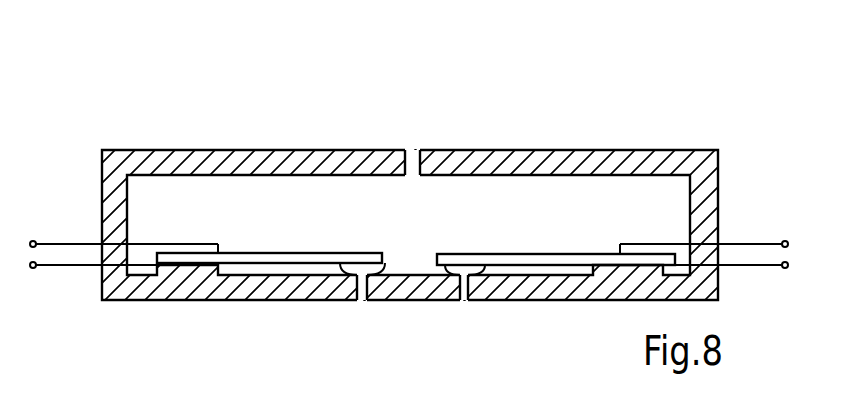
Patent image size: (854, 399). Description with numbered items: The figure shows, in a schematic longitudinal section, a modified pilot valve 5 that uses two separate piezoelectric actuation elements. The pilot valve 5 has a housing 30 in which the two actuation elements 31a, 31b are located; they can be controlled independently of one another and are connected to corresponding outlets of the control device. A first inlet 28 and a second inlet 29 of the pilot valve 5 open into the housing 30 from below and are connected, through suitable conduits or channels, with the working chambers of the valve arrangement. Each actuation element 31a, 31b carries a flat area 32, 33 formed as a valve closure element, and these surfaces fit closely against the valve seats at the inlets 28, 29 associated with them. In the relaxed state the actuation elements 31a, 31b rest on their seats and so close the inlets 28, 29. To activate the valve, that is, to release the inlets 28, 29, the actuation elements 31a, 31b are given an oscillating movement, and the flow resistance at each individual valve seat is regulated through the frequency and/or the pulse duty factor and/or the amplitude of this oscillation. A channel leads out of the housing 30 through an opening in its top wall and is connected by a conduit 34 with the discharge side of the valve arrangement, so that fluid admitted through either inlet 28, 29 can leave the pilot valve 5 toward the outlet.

The pilot valve 5 is at (427, 213).
The first inlet 28 is at (358, 301).
The second inlet 29 is at (463, 301).
The housing 30 is at (642, 150).
The actuation element 31a is at (303, 254).
The actuation element 31b is at (475, 255).
The flat area 32 is at (345, 268).
The flat area 33 is at (491, 278).
The conduit 34 is at (411, 158).